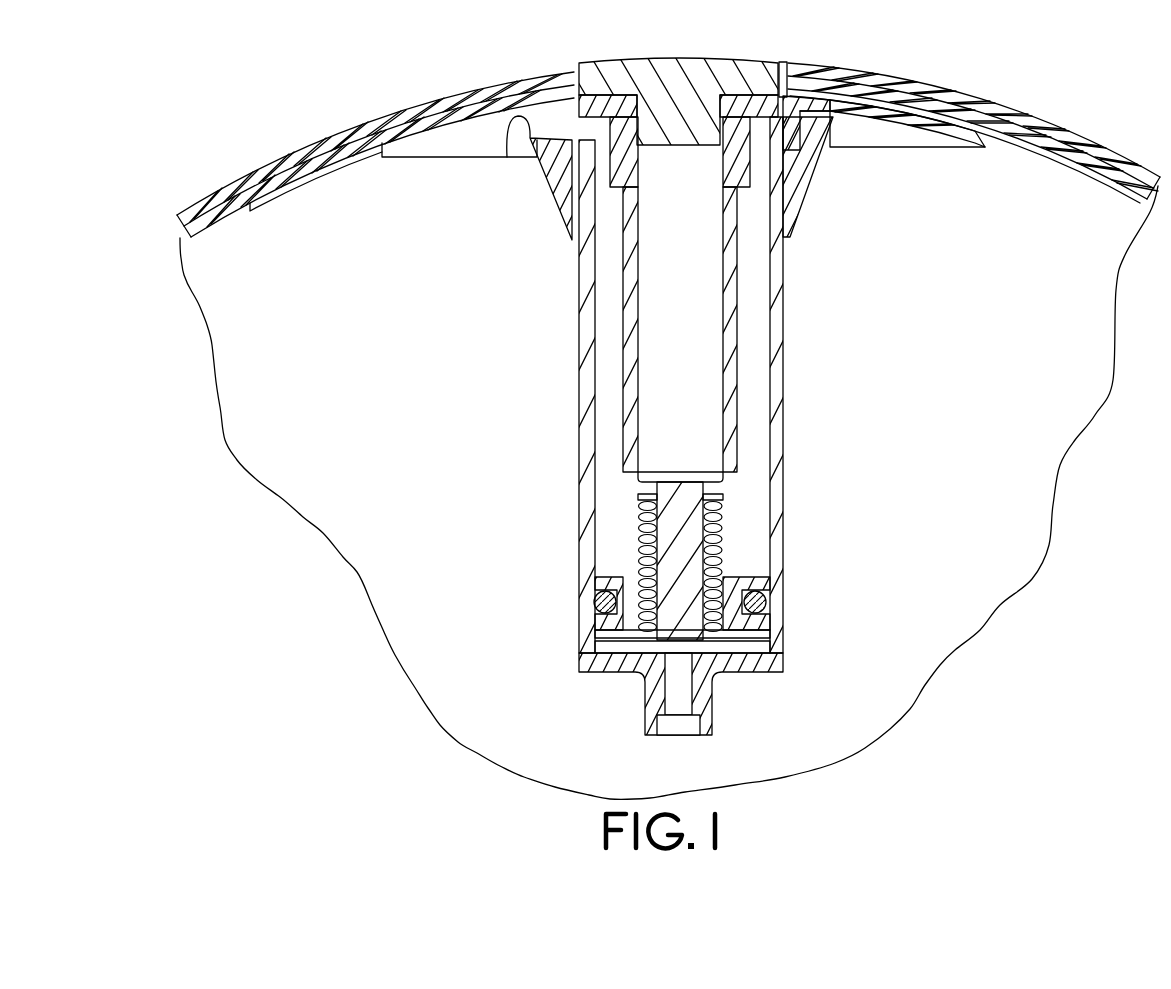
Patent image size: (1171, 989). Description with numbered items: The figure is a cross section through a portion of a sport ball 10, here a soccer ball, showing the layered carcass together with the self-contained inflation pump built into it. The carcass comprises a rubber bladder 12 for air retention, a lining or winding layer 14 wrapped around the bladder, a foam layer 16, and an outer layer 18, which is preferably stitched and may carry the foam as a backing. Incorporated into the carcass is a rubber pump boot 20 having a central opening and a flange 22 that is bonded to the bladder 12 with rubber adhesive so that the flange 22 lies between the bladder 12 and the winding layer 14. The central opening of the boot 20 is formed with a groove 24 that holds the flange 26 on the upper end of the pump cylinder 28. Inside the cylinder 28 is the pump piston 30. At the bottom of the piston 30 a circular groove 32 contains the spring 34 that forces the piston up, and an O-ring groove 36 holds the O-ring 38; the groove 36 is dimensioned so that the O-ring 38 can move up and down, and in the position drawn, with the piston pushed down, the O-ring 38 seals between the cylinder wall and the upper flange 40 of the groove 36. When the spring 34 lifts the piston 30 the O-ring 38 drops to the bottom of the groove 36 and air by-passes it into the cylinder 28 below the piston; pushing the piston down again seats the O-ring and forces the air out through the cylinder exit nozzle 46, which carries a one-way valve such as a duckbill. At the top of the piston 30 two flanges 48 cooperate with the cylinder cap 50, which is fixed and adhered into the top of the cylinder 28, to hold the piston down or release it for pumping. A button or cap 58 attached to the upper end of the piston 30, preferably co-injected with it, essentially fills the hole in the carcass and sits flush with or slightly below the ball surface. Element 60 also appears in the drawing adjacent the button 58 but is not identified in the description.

The sport ball 10 is at (345, 587).
The rubber bladder 12 is at (265, 198).
The lining or winding layer 14 is at (176, 246).
The foam layer 16 is at (176, 216).
The outer layer 18 is at (232, 177).
The pump boot 20 is at (826, 172).
The flange 22 is at (928, 128).
The groove 24 is at (545, 162).
The flange 26 is at (787, 150).
The pump cylinder 28 is at (783, 326).
The pump piston 30 is at (737, 440).
The circular groove 32 is at (722, 498).
The spring 34 is at (725, 530).
The O-ring groove 36 is at (748, 614).
The O-ring 38 is at (759, 600).
The upper flange 40 is at (757, 578).
The cylinder exit nozzle 46 is at (713, 712).
The flanges 48 is at (740, 182).
The cylinder cap 50 is at (595, 178).
The button or cap 58 is at (676, 62).
The pin 60 is at (763, 93).